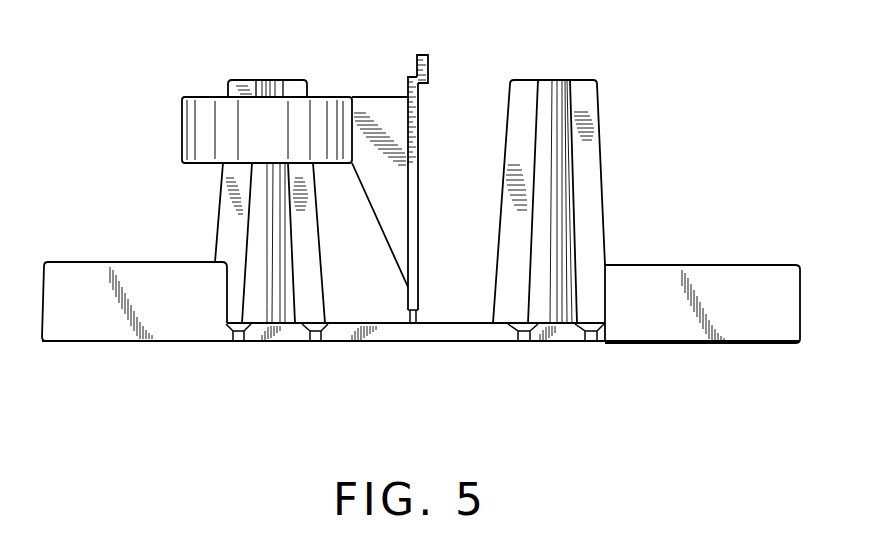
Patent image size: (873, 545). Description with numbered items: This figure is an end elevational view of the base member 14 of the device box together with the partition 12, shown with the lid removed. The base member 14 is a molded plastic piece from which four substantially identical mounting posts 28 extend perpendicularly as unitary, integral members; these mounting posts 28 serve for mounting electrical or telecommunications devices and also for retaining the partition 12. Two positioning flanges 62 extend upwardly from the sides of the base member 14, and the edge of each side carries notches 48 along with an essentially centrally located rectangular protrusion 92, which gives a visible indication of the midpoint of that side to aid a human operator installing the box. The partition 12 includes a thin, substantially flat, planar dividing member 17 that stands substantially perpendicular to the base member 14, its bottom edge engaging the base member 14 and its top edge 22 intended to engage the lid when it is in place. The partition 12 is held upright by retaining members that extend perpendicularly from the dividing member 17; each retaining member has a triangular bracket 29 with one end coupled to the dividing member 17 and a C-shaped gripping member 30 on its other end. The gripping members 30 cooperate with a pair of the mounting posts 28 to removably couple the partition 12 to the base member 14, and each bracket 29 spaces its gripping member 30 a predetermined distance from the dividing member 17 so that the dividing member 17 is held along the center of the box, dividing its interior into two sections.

The partition 12 is at (463, 169).
The base member 14 is at (431, 353).
The dividing member 17 is at (418, 172).
The top edge 22 is at (422, 55).
The mounting posts 28 is at (272, 72).
The triangular bracket 29 is at (388, 97).
The C-shaped gripping member 30 is at (181, 132).
The notches 48 is at (238, 343).
The positioning flanges 62 is at (135, 262).
The rectangular protrusion 92 is at (418, 313).